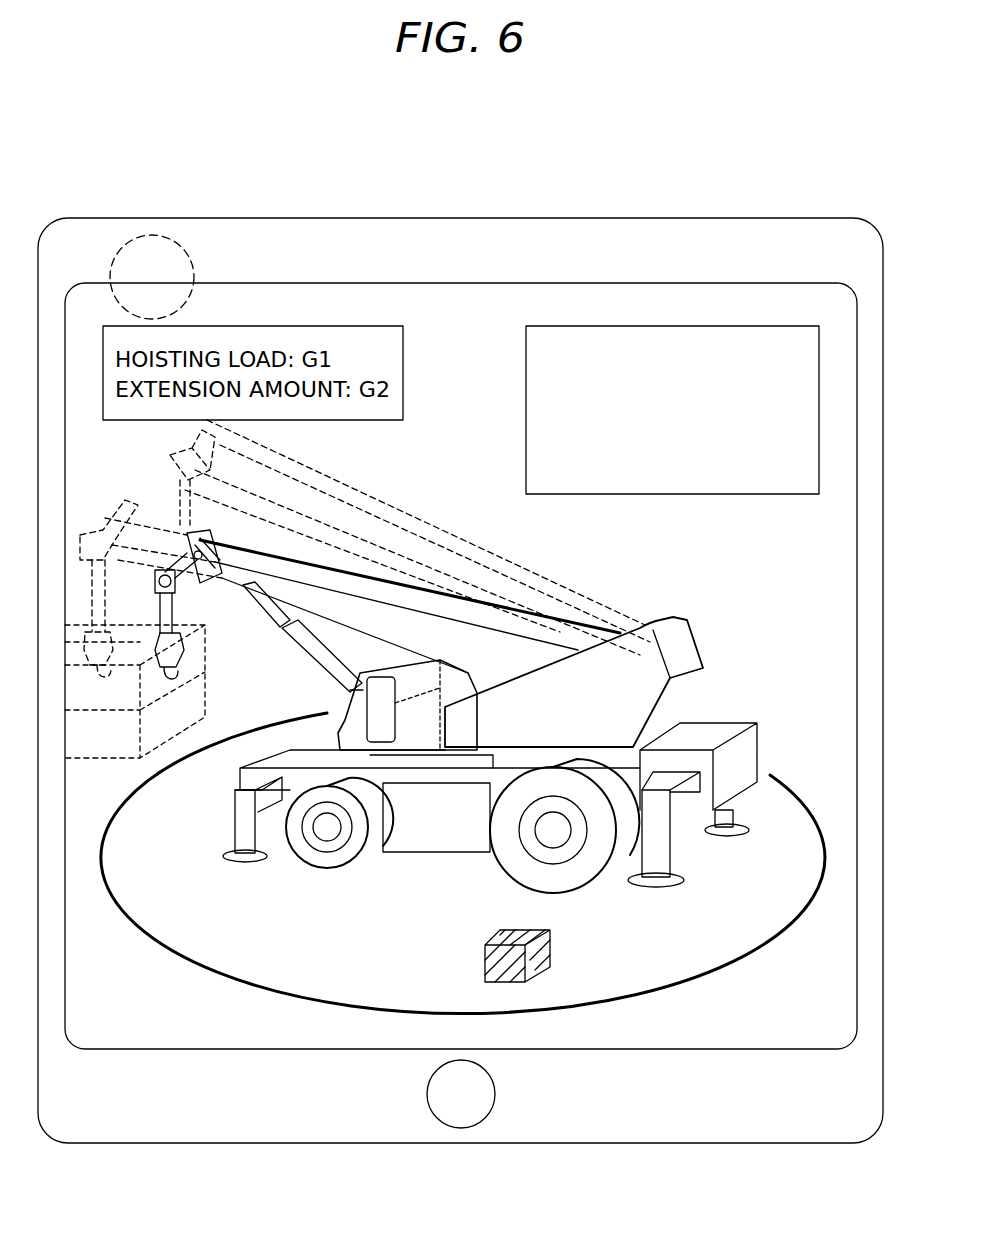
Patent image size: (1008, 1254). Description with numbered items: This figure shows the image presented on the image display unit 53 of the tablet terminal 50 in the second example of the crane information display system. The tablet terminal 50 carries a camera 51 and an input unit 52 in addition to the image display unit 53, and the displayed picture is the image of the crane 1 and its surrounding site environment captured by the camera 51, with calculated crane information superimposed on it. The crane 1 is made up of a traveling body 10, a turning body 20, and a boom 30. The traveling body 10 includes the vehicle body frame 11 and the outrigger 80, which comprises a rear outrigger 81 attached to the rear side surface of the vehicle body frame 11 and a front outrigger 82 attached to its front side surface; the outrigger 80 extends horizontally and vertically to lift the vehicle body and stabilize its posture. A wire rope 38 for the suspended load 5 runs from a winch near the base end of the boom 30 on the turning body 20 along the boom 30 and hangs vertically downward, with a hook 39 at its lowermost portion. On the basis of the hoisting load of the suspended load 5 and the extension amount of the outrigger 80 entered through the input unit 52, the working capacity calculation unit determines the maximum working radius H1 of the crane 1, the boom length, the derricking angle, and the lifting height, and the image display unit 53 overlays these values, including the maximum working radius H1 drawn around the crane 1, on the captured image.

The crane 1 is at (503, 573).
The suspended load 5 is at (550, 957).
The traveling body 10 is at (498, 829).
The vehicle body frame 11 is at (437, 843).
The turning body 20 is at (717, 587).
The boom 30 is at (328, 560).
The wire rope 38 is at (175, 607).
The hook 39 is at (172, 657).
The tablet terminal 50 is at (413, 205).
The camera 51 is at (190, 263).
The input unit 52 is at (659, 316).
The image display unit 53 is at (500, 392).
The outrigger 80 is at (438, 855).
The rear outrigger 81 is at (673, 852).
The front outrigger 82 is at (230, 818).
The maximum working radius H1 is at (100, 878).